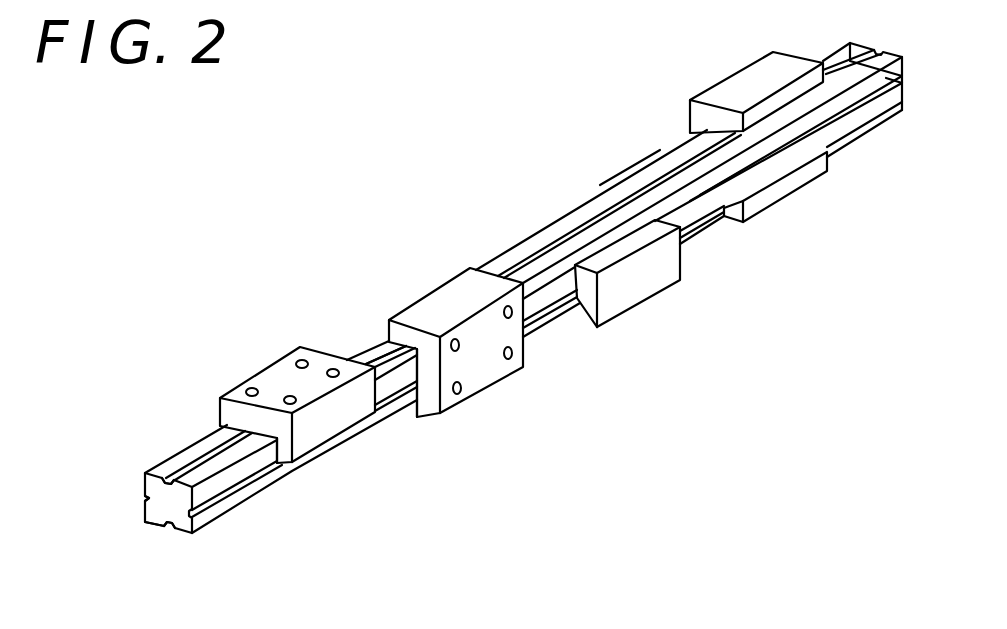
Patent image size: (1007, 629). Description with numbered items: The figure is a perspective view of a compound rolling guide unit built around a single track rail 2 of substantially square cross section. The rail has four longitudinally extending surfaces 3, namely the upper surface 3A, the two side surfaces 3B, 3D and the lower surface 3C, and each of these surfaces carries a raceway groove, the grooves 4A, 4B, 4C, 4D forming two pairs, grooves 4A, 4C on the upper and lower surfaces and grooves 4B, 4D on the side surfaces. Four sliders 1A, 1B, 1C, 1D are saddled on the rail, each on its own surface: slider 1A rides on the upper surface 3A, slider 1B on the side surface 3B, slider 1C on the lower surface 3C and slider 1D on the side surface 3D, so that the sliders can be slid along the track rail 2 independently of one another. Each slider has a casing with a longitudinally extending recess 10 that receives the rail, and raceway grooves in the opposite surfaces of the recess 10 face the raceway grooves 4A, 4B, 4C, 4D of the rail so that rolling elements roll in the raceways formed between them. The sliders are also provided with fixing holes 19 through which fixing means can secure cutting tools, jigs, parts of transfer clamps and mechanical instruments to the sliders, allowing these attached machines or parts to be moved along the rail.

The slider 1A is at (282, 380).
The slider 1B is at (485, 360).
The slider 1C is at (638, 278).
The slider 1D is at (752, 78).
The track rail 2 is at (518, 250).
The surfaces 3 is at (575, 218).
The upper surface 3A is at (370, 332).
The side surface 3B is at (778, 172).
The lower surface 3C is at (178, 533).
The side surface 3D is at (166, 478).
The raceway groove 4A is at (633, 176).
The raceway groove 4B is at (704, 198).
The raceway groove 4C is at (165, 528).
The raceway groove 4D is at (146, 498).
The recess 10 is at (256, 440).
The fixing holes 19 is at (333, 370).